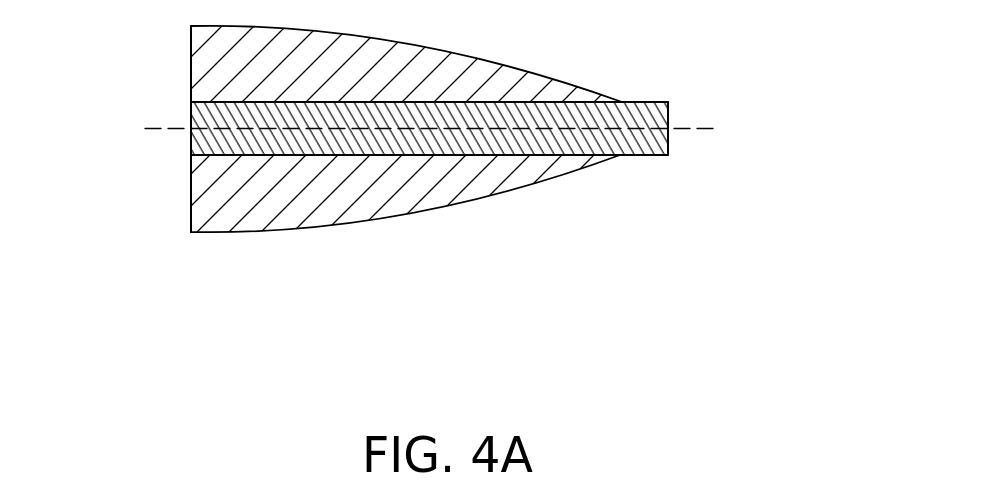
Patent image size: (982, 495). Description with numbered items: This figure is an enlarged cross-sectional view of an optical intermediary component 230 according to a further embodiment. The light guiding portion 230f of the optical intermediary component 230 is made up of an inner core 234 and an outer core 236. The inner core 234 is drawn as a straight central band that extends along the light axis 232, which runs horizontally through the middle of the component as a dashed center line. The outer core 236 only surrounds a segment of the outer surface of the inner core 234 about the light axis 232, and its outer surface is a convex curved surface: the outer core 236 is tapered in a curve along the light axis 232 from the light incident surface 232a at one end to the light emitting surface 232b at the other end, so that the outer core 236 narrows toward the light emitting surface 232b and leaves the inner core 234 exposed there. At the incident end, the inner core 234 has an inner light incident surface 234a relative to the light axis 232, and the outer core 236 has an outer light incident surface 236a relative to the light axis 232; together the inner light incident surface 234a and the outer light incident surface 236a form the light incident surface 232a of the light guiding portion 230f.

The optical intermediary component 230 is at (436, 197).
The light guiding portion 230f is at (426, 190).
The light axis 232 is at (690, 124).
The light incident surface 232a is at (185, 300).
The light emitting surface 232b is at (684, 132).
The inner core 234 is at (600, 142).
The inner light incident surface 234a is at (191, 142).
The outer core 236 is at (498, 178).
The outer light incident surface 236a is at (191, 187).